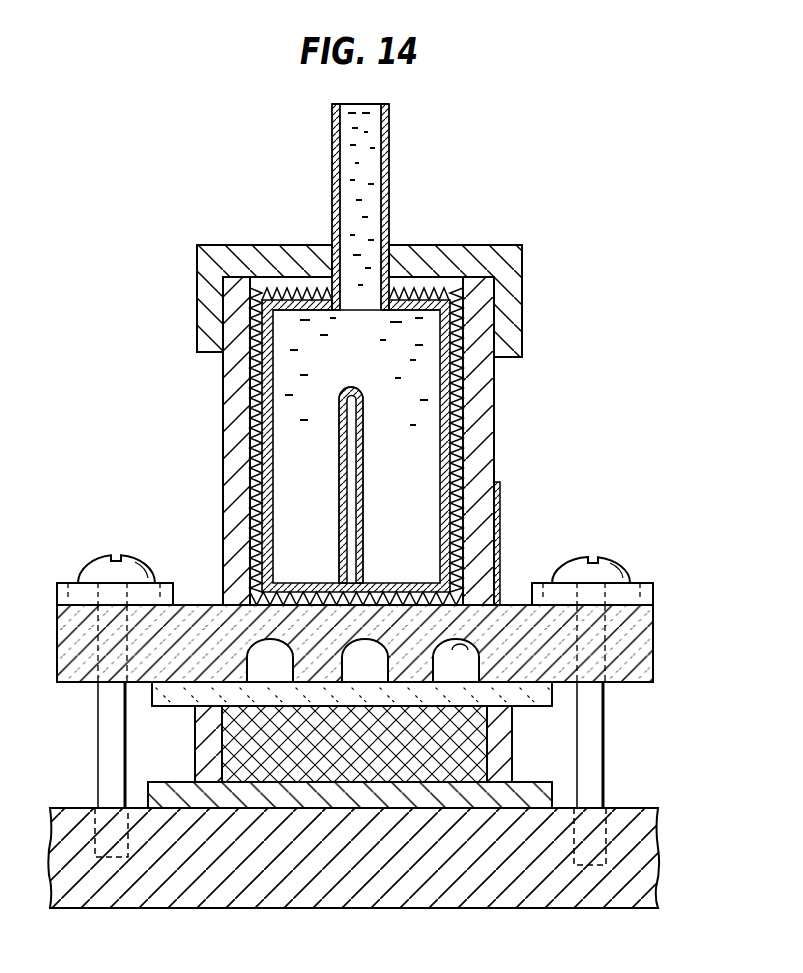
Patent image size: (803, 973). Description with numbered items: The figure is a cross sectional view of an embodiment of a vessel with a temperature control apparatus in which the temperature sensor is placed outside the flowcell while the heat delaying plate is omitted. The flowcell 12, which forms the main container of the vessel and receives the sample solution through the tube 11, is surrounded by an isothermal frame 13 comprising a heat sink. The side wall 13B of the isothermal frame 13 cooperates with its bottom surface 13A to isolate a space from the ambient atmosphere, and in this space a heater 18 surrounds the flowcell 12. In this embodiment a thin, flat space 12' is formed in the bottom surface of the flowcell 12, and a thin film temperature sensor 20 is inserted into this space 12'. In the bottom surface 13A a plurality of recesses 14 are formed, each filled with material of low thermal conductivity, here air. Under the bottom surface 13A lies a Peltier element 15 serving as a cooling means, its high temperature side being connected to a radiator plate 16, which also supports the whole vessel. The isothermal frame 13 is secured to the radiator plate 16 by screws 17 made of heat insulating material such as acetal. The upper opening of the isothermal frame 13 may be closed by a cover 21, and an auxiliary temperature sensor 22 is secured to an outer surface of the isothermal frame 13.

The tube 11 is at (392, 166).
The flowcell 12 is at (407, 446).
The thin, flat space 12' is at (453, 475).
The isothermal frame 13 is at (494, 468).
The bottom surface 13A is at (190, 670).
The side wall 13B is at (222, 402).
The recesses 14 is at (462, 642).
The Peltier element 15 is at (470, 748).
The radiator plate 16 is at (421, 890).
The screws 17 is at (98, 745).
The heater 18 is at (250, 449).
The temperature sensor 20 is at (348, 510).
The cover 21 is at (487, 246).
The auxiliary temperature sensor 22 is at (500, 526).